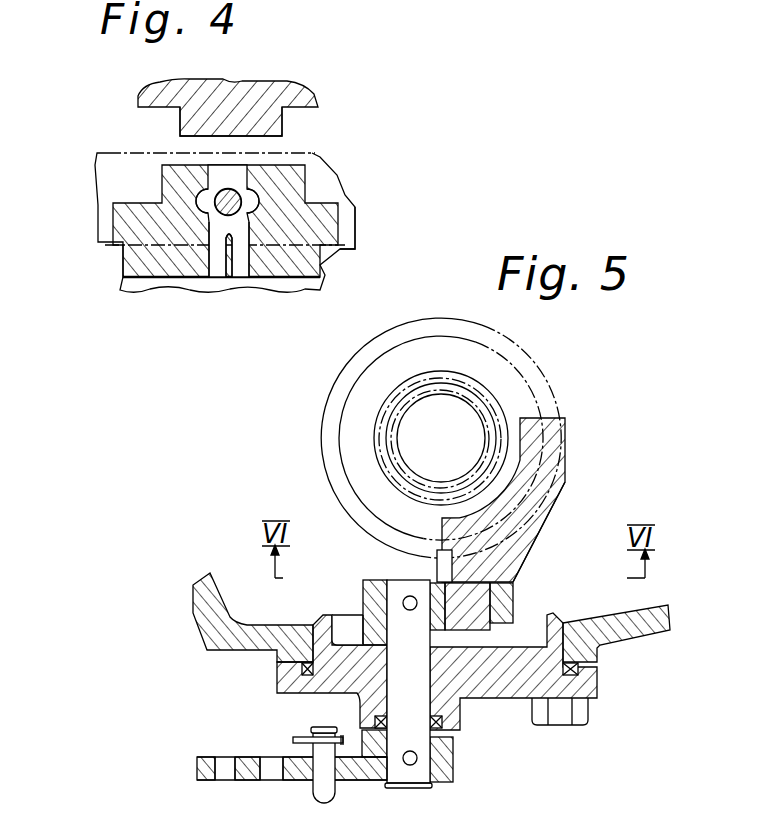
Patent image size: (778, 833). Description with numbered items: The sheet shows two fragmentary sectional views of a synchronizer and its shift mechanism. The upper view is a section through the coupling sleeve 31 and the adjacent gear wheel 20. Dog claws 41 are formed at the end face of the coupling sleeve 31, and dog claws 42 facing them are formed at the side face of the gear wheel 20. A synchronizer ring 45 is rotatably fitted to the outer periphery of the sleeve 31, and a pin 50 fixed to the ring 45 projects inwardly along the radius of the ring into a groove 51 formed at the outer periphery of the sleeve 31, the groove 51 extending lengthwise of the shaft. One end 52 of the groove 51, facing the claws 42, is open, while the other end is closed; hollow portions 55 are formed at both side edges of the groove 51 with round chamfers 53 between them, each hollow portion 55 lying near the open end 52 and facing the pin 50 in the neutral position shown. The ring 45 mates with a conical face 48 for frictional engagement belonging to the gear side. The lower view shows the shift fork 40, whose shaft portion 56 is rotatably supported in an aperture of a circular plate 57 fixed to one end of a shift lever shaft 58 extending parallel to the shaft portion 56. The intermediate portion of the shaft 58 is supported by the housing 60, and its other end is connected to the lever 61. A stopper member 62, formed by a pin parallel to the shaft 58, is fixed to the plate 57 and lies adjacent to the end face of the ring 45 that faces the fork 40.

In FIG. 4, the gear wheel 20 is at (267, 76).
In FIG. 4, the coupling sleeve 31 is at (335, 263).
In FIG. 5, the coupling sleeve 31 is at (337, 428).
In FIG. 5, the shift fork 40 is at (545, 450).
In FIG. 4, the dog claws 41 is at (292, 185).
In FIG. 4, the dog claws 42 is at (273, 128).
In FIG. 4, the synchronizer ring 45 is at (355, 212).
In FIG. 5, the synchronizer ring 45 is at (316, 470).
In FIG. 5, the conical face 48 is at (540, 507).
In FIG. 4, the pin 50 is at (220, 195).
In FIG. 4, the groove 51 is at (226, 256).
In FIG. 4, the open end 52 is at (232, 172).
In FIG. 4, the round chamfers 53 is at (183, 279).
In FIG. 4, the hollow portions 55 is at (197, 207).
In FIG. 5, the shaft portion 56 is at (490, 610).
In FIG. 5, the circular plate 57 is at (505, 592).
In FIG. 5, the shift lever shaft 58 is at (424, 698).
In FIG. 5, the housing 60 is at (515, 688).
In FIG. 5, the lever 61 is at (298, 780).
In FIG. 5, the stopper member 62 is at (450, 562).